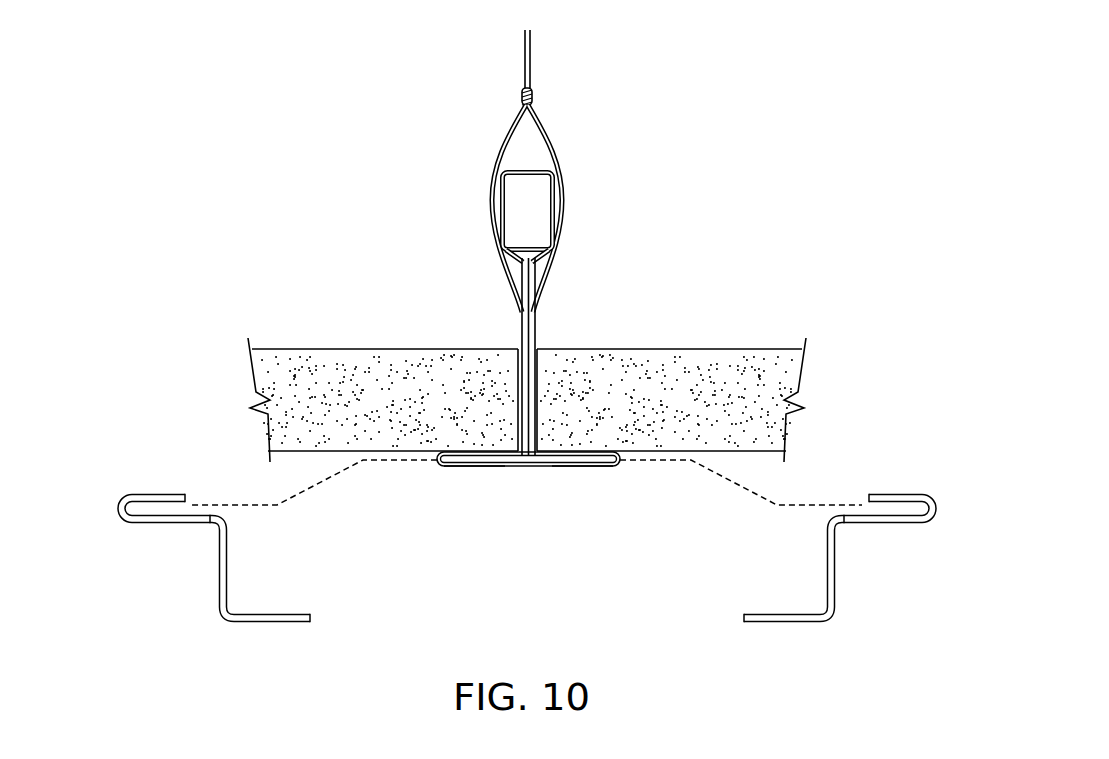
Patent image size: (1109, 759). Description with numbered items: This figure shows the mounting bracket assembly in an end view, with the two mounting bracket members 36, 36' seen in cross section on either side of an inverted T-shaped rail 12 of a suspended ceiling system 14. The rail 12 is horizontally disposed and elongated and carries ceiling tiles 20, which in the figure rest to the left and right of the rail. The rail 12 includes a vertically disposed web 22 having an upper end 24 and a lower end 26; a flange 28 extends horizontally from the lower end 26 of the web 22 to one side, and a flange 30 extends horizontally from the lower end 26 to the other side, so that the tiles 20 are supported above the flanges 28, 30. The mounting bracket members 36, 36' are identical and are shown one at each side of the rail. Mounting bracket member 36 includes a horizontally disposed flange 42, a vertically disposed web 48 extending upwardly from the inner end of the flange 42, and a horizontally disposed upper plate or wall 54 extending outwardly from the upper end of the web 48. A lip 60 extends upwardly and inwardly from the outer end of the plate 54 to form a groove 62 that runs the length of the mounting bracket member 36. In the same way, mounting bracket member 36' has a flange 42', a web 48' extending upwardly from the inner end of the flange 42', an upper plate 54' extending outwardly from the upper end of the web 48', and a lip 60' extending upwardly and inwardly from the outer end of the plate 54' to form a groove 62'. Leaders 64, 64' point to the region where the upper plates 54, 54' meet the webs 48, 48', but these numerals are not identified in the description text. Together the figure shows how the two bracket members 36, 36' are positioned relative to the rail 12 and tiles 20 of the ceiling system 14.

The inverted T-shaped rail 12 is at (541, 171).
The suspended ceiling system 14 is at (578, 358).
The ceiling tiles 20 is at (353, 355).
The web 22 is at (542, 326).
The upper end 24 is at (527, 253).
The lower end 26 is at (541, 462).
The flange 28 is at (575, 462).
The flange 30 is at (482, 460).
The mounting bracket member 36 is at (796, 518).
The mounting bracket member 36' is at (257, 521).
The lip 60 is at (919, 443).
The lip 60' is at (132, 443).
The groove 62 is at (946, 538).
The groove 62' is at (104, 543).
The upper plate 54 is at (894, 573).
The upper plate 54' is at (150, 576).
The transition 64 is at (758, 537).
The transition 64' is at (300, 541).
The web 48 is at (870, 618).
The web 48' is at (176, 615).
The flange 42 is at (761, 658).
The flange 42' is at (324, 608).